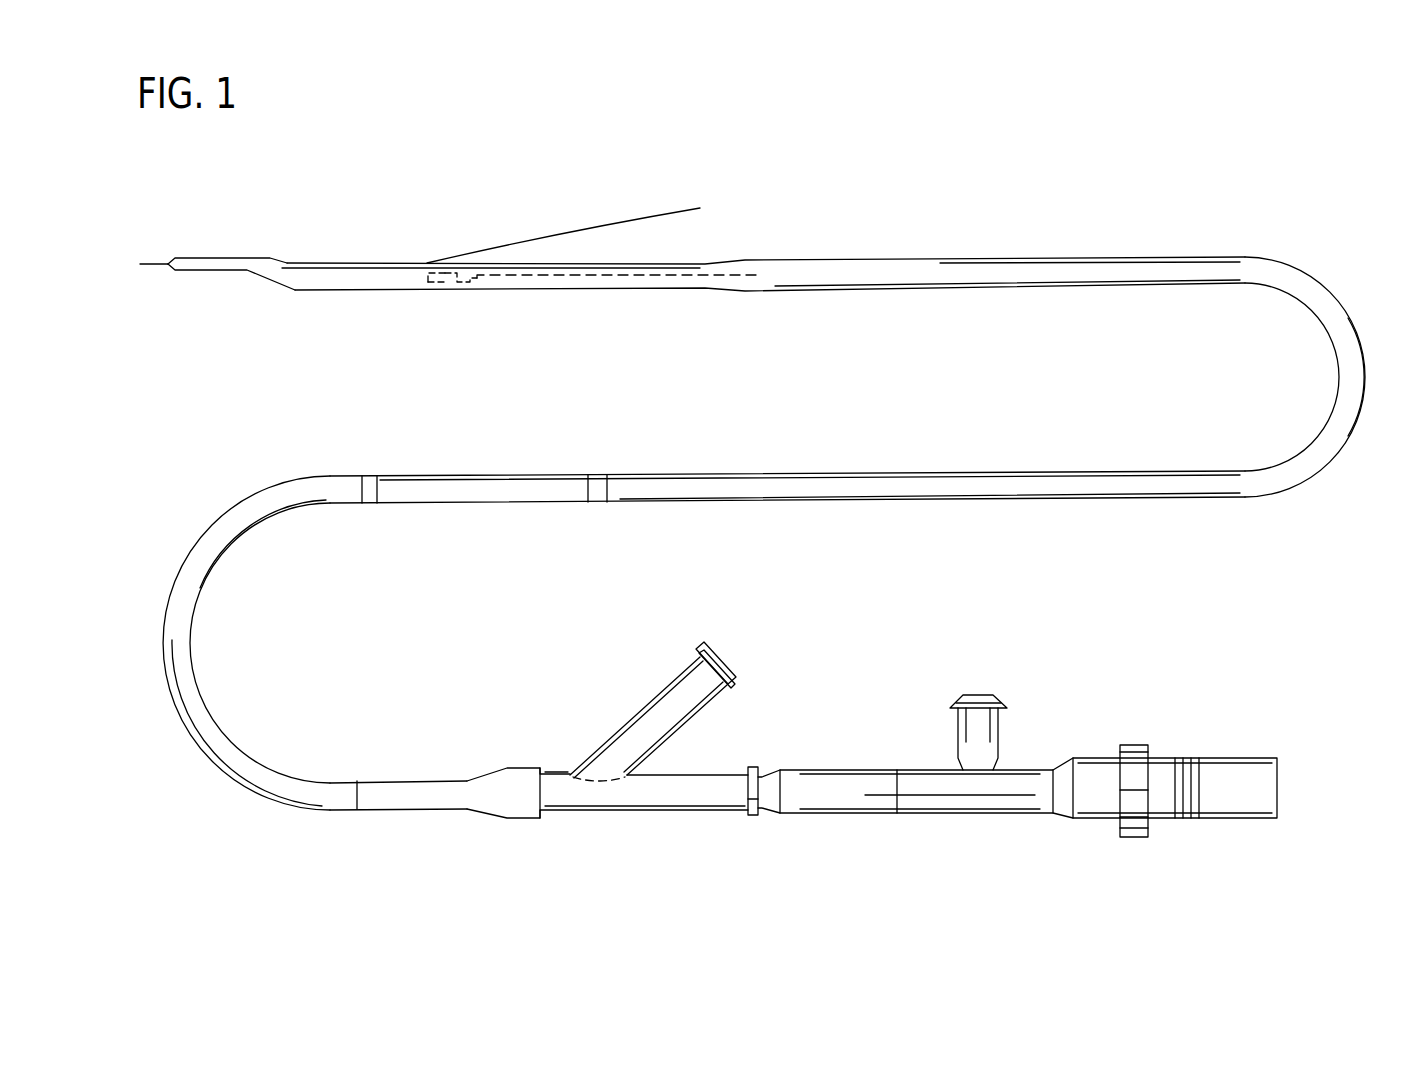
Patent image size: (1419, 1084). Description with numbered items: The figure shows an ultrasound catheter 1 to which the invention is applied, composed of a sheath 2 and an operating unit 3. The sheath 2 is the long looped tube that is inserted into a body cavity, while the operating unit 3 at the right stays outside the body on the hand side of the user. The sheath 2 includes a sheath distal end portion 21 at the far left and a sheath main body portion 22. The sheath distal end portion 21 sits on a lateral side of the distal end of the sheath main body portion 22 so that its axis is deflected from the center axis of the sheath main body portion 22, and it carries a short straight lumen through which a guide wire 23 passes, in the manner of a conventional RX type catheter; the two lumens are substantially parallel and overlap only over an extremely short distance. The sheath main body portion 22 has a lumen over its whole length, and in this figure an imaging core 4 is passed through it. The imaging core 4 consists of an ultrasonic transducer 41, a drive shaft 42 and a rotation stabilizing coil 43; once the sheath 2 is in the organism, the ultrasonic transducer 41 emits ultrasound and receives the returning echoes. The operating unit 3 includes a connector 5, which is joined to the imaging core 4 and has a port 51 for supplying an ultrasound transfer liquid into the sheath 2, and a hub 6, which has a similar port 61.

The ultrasound catheter 1 is at (171, 186).
The sheath 2 is at (907, 248).
The sheath distal end portion 21 is at (230, 258).
The sheath main body portion 22 is at (398, 290).
The guide wire 23 is at (667, 210).
The operating unit 3 is at (800, 845).
The imaging core 4 is at (525, 207).
The ultrasonic transducer 41 is at (460, 272).
The drive shaft 42 is at (493, 272).
The rotation stabilizing coil 43 is at (430, 272).
The connector 5 is at (990, 813).
The port 51 is at (990, 735).
The hub 6 is at (597, 812).
The port 61 is at (690, 722).